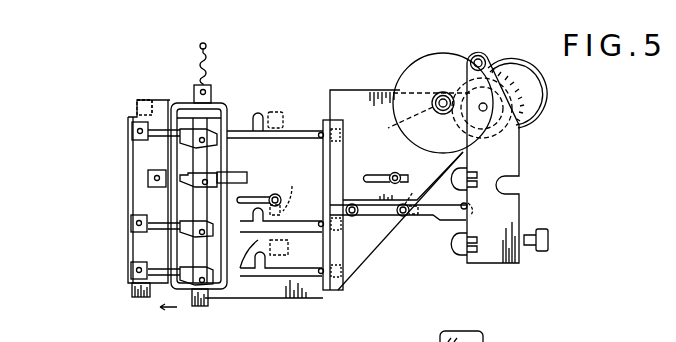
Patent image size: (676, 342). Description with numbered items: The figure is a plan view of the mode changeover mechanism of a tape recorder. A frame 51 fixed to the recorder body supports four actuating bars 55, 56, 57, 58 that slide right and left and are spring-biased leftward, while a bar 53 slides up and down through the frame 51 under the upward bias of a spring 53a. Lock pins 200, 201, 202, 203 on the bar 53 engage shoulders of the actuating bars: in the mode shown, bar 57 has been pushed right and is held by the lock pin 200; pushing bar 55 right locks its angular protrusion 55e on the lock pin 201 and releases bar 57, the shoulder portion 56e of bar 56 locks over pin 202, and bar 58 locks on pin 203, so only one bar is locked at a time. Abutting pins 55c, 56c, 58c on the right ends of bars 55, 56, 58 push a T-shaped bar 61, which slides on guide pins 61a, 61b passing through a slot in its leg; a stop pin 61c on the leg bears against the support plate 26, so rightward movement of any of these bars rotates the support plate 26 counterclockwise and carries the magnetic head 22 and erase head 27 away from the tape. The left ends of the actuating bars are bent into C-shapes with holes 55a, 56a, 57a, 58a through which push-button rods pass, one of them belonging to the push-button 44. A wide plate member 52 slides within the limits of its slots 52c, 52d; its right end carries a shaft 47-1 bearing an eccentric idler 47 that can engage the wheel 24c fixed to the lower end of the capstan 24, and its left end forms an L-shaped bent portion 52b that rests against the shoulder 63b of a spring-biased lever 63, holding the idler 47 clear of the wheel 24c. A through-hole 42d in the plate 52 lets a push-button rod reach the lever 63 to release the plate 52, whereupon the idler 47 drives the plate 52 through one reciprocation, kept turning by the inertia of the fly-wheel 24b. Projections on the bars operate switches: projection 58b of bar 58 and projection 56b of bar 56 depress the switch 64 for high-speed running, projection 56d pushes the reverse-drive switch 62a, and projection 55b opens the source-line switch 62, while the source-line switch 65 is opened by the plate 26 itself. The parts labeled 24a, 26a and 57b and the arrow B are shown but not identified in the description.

The magnetic head 22 is at (479, 170).
The capstan 24 is at (440, 115).
The wheel shaft 24a is at (440, 94).
The fly-wheel 24b is at (408, 67).
The wheel 24c is at (390, 127).
The support plate 26 is at (519, 152).
The arm pivot 26a is at (484, 56).
The erase head 27 is at (466, 249).
The through-hole 42d is at (150, 178).
The push-button 44 is at (481, 333).
The eccentric idler 47 is at (511, 97).
The shaft 47-1 is at (485, 101).
The frame 51 is at (220, 108).
The plate member 52 is at (340, 87).
The L-shaped bent portion 52b is at (190, 185).
The slot 52c is at (268, 192).
The slot 52d is at (385, 176).
The bar 53 is at (210, 84).
The spring 53a is at (200, 60).
The actuating bar 55 is at (193, 135).
The hole 55a is at (132, 128).
The projection 55b is at (255, 112).
The abutting pin 55c is at (322, 130).
The angular protrusion 55e is at (190, 136).
The actuating bar 56 is at (220, 218).
The hole 56a is at (131, 222).
The projection 56b is at (252, 270).
The abutting pin 56c is at (338, 192).
The projection 56d is at (400, 228).
The shoulder portion 56e is at (190, 235).
The actuating bar 57 is at (235, 182).
The hole 57a is at (200, 140).
The lever arm 57b is at (197, 147).
The actuating bar 58 is at (206, 290).
The hole 58a is at (131, 270).
The projection 58b is at (265, 262).
The abutting pin 58c is at (313, 272).
The T-shaped bar 61 is at (425, 222).
The guide pin 61a is at (352, 217).
The guide pin 61b is at (403, 217).
The stop pin 61c is at (468, 206).
The electric switch 62 is at (288, 112).
The electric switch 62a is at (295, 191).
The lever 63 is at (155, 283).
The shoulder portion 63b is at (200, 235).
The electric switch 64 is at (264, 253).
The electric switch 65 is at (549, 239).
The lock pin 200 is at (185, 178).
The lock pin 201 is at (187, 168).
The pin 202 is at (190, 245).
The pin 203 is at (193, 288).
The direction arrow B is at (479, 54).